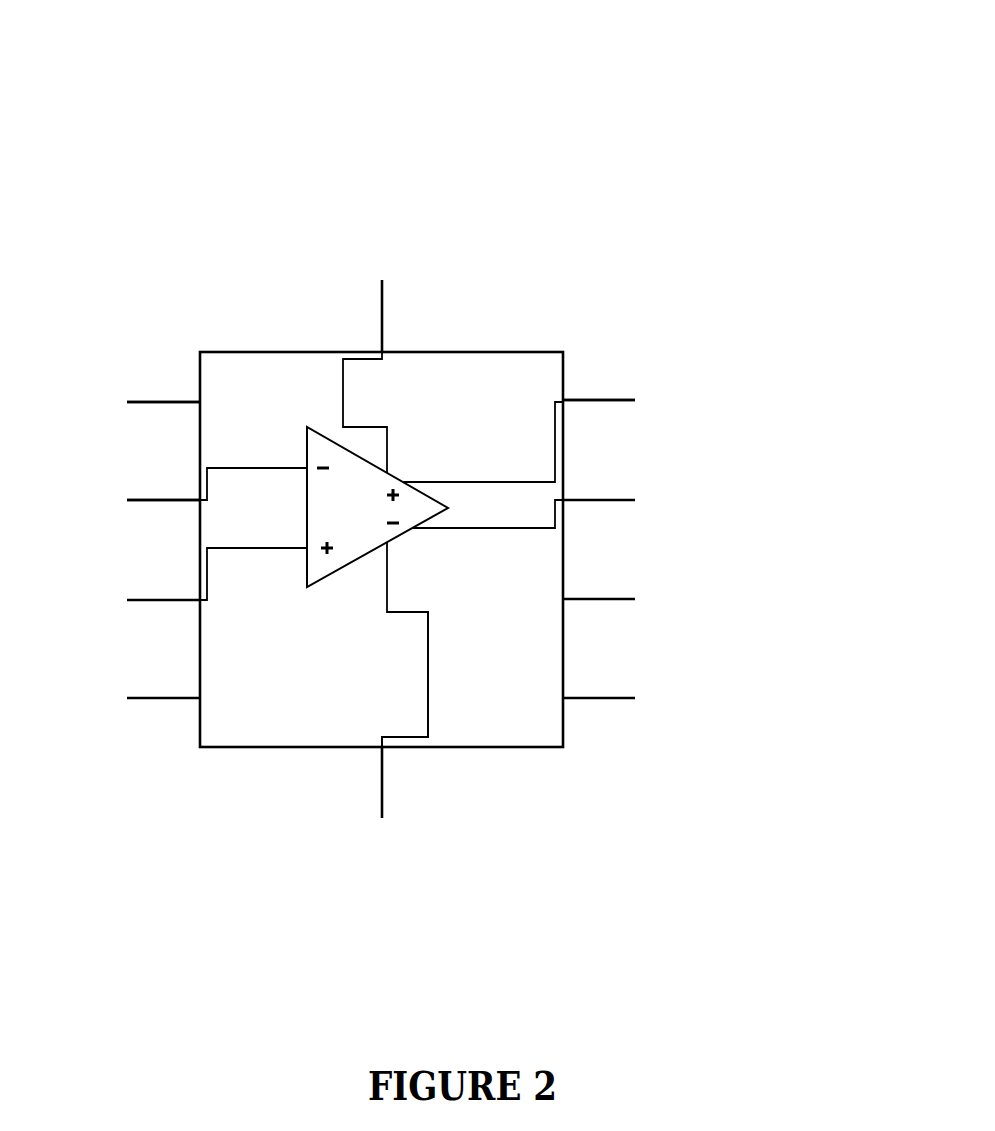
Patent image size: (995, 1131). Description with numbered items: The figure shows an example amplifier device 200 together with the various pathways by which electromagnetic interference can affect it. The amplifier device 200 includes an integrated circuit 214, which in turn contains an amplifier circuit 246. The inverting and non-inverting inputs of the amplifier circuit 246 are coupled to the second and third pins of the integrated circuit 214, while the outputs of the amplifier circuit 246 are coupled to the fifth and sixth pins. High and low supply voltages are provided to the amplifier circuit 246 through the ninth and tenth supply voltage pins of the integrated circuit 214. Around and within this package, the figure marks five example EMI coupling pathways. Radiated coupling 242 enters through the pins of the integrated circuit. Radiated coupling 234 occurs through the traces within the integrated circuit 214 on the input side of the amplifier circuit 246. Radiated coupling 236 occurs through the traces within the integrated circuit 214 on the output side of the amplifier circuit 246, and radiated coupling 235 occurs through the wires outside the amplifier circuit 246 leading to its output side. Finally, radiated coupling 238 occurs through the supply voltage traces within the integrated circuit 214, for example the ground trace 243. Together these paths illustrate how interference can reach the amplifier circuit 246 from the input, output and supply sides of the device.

The amplifier device 200 is at (752, 58).
The integrated circuit 214 is at (502, 748).
The radiated coupling 234 is at (273, 462).
The radiated coupling 235 is at (628, 400).
The radiated coupling 236 is at (479, 482).
The radiated coupling 238 is at (333, 387).
The radiated coupling 242 is at (150, 500).
The ground trace 243 is at (432, 693).
The amplifier circuit 246 is at (323, 521).